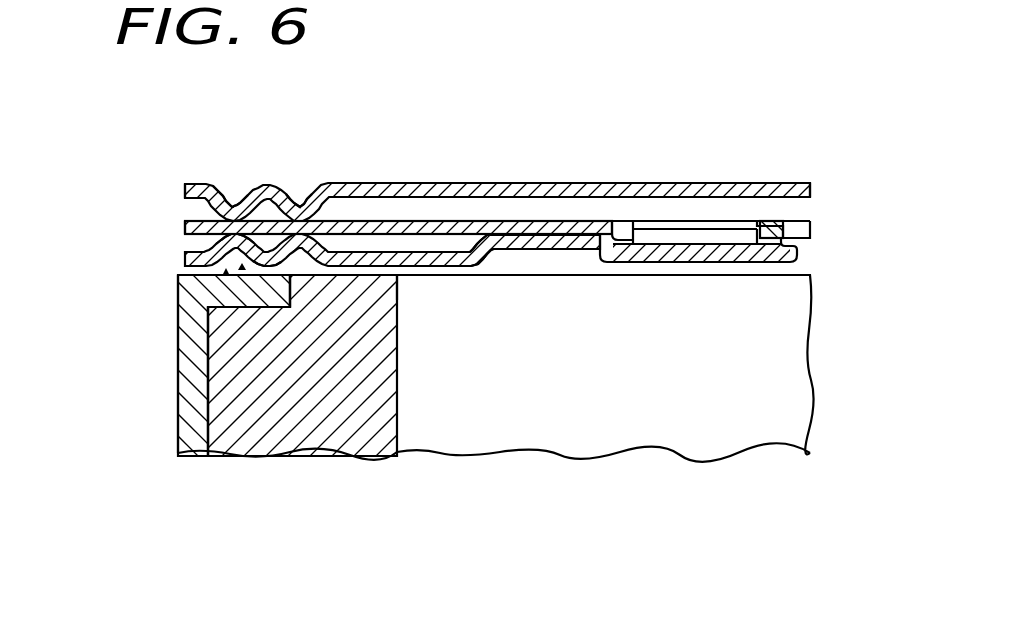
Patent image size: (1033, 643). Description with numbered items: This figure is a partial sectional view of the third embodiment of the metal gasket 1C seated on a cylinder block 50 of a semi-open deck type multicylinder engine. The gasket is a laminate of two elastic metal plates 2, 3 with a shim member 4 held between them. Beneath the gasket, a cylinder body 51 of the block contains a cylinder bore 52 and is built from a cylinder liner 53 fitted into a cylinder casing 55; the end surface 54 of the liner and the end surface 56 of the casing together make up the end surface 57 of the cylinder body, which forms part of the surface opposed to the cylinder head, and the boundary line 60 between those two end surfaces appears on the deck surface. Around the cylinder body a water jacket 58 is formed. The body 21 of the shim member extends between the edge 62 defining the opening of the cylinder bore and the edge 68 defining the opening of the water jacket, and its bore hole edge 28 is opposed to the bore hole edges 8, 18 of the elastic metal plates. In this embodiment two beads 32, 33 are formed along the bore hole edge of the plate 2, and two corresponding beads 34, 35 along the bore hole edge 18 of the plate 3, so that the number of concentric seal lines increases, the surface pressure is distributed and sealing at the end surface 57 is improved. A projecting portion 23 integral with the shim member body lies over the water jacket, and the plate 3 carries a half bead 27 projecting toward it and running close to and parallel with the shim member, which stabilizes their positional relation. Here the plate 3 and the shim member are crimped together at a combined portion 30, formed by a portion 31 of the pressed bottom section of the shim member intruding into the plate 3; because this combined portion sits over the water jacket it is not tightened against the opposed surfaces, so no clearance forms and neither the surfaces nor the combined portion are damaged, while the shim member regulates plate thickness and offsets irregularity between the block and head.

The heat exchanger assembly 1C is at (681, 160).
The elastic metal plate 2 is at (592, 182).
The elastic metal plate 3 is at (489, 269).
The shim member 4 is at (606, 216).
The bore hole edge 8 is at (190, 190).
The bore hole edge 18 is at (190, 258).
The shim member body 21 is at (376, 221).
The projecting portion 23 is at (527, 232).
The half bead 27 is at (547, 240).
The bore hole edge 28 is at (192, 225).
The combined portion 30 is at (700, 232).
The intruded portion 31 is at (619, 250).
The bead 32 is at (192, 236).
The bead 33 is at (307, 278).
The bead 34 is at (225, 200).
The bead 35 is at (294, 206).
The cylinder block 50 is at (176, 437).
The cylinder body 51 is at (338, 431).
The cylinder bore 52 is at (91, 350).
The cylinder liner 53 is at (190, 358).
The end surface of cylinder liner 54 is at (227, 308).
The cylinder casing 55 is at (360, 414).
The end surface of cylinder casing 56 is at (360, 277).
The end surface of cylinder body 57 is at (247, 262).
The water jacket 58 is at (613, 400).
The boundary line 60 is at (271, 292).
The edge of cylinder bore opening 62 is at (226, 277).
The edge of water jacket opening 68 is at (399, 280).